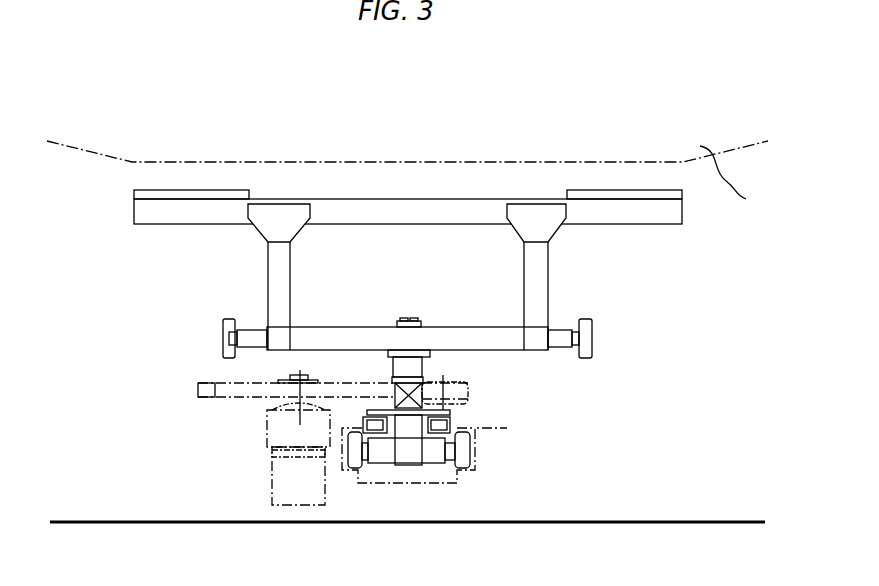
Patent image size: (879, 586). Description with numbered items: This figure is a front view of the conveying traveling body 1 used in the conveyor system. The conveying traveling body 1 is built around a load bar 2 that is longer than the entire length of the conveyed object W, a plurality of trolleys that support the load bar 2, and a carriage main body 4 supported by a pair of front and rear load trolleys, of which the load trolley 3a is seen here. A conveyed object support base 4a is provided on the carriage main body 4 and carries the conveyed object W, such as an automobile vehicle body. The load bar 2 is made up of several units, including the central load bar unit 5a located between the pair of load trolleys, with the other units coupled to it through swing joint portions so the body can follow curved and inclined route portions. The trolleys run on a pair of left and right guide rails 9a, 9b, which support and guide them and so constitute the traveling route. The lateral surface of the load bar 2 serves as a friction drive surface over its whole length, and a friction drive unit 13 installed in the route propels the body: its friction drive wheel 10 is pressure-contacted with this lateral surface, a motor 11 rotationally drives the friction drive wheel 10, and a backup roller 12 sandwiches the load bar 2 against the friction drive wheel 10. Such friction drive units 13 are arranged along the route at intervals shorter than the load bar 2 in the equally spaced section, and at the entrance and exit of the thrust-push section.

The conveying traveling body 1 is at (562, 291).
The load bar 2 is at (409, 368).
The load trolley 3a is at (408, 474).
The carriage main body 4 is at (405, 210).
The conveyed object support base 4a is at (203, 194).
The central load bar unit 5a is at (393, 393).
The guide rail 9a is at (337, 465).
The guide rail 9b is at (478, 453).
The friction drive wheel 10 is at (198, 392).
The motor 11 is at (267, 462).
The backup roller 12 is at (470, 393).
The friction drive unit 13 is at (210, 373).
The conveyed object W is at (746, 199).